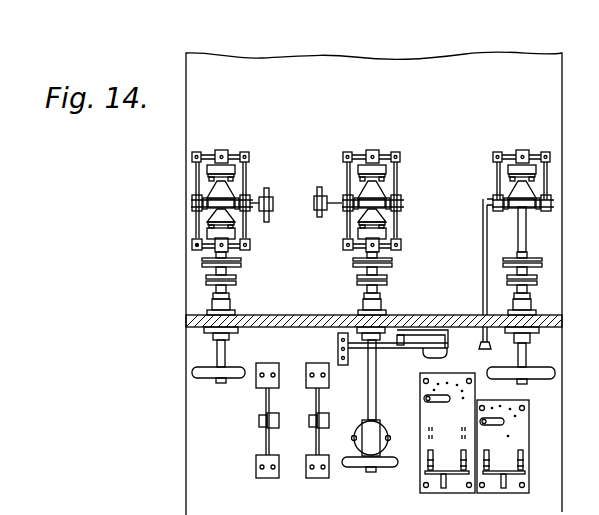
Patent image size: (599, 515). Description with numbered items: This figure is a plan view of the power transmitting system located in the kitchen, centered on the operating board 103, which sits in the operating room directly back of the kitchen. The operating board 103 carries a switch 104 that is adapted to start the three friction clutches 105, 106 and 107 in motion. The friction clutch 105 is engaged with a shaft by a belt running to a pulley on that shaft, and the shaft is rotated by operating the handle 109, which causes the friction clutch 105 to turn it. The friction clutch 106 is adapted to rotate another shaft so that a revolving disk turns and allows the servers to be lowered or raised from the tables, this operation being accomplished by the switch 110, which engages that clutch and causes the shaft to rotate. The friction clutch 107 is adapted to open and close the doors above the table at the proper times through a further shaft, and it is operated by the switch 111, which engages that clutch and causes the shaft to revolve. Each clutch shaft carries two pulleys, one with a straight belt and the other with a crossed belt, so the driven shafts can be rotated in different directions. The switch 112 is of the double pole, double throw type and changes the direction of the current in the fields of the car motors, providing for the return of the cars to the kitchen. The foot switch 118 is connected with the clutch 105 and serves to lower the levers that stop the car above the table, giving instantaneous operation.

The operating board 103 is at (374, 283).
The switch 104 is at (518, 470).
The friction clutch 105 is at (509, 191).
The friction clutch 106 is at (380, 193).
The friction clutch 107 is at (228, 194).
The handle 109 is at (484, 350).
The switch 110 is at (318, 478).
The switch 111 is at (265, 441).
The switch 112 is at (441, 478).
The foot switch 118 is at (394, 350).